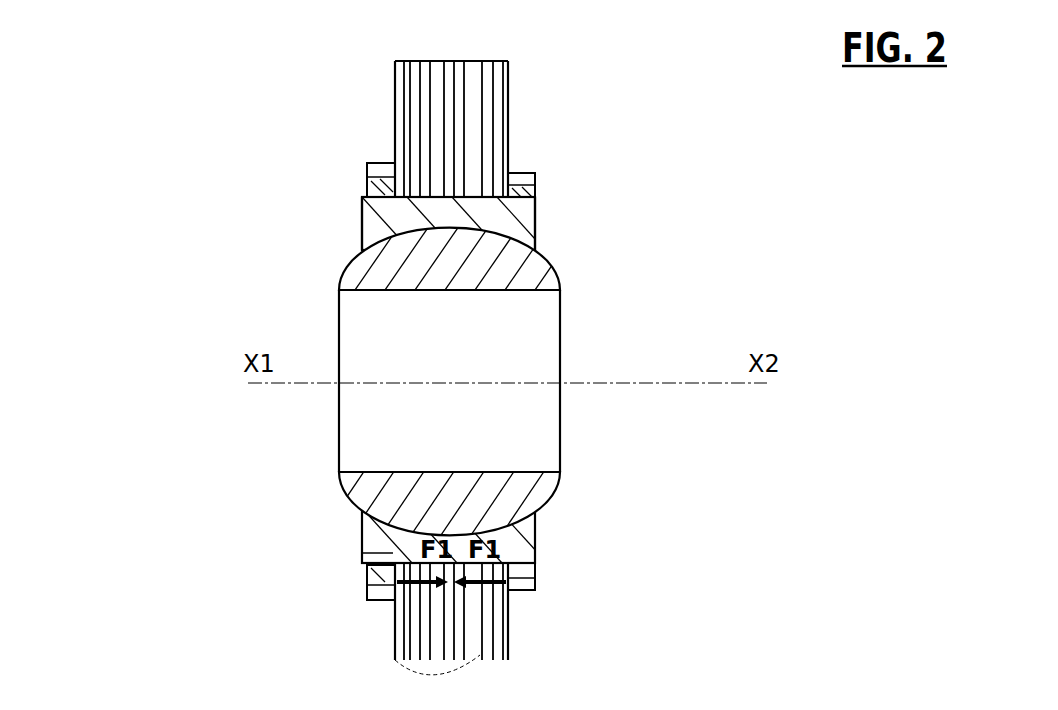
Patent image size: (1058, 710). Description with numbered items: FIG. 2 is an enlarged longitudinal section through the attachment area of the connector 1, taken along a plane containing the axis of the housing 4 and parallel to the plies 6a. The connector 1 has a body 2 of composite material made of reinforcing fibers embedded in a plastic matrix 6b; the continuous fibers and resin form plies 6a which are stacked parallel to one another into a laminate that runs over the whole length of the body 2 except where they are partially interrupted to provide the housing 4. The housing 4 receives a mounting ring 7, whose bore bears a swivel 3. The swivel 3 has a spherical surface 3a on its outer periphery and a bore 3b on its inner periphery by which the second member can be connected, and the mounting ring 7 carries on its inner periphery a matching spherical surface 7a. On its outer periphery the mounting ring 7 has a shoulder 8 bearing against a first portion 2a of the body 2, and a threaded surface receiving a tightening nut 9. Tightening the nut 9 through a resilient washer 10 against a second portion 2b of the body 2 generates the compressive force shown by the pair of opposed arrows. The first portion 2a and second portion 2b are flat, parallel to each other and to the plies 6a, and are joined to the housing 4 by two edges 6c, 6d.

The connector 1 is at (106, 205).
The body 2 is at (490, 650).
The first portion 2a is at (510, 607).
The second portion 2b is at (395, 618).
The swivel 3 is at (562, 303).
The spherical surface 3a is at (535, 528).
The bore 3b is at (528, 472).
The housing 4 is at (440, 232).
The plies 6a is at (485, 84).
The plastic matrix 6b is at (477, 100).
The edge 6c is at (535, 212).
The edge 6d is at (372, 215).
The mounting ring 7 is at (535, 240).
The spherical surface 7a is at (339, 289).
The shoulder 8 is at (517, 168).
The tightening nut 9 is at (372, 165).
The resilient washer 10 is at (392, 160).